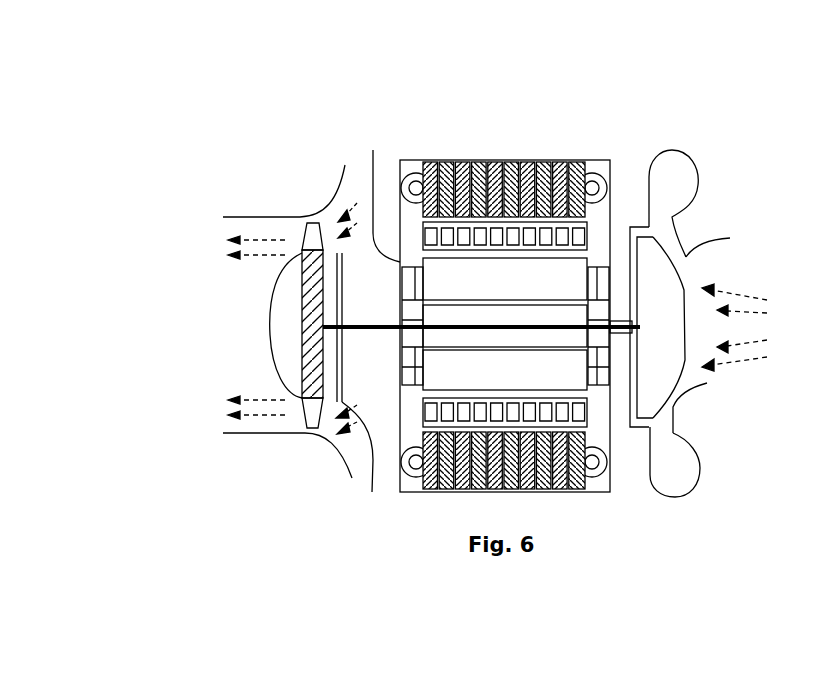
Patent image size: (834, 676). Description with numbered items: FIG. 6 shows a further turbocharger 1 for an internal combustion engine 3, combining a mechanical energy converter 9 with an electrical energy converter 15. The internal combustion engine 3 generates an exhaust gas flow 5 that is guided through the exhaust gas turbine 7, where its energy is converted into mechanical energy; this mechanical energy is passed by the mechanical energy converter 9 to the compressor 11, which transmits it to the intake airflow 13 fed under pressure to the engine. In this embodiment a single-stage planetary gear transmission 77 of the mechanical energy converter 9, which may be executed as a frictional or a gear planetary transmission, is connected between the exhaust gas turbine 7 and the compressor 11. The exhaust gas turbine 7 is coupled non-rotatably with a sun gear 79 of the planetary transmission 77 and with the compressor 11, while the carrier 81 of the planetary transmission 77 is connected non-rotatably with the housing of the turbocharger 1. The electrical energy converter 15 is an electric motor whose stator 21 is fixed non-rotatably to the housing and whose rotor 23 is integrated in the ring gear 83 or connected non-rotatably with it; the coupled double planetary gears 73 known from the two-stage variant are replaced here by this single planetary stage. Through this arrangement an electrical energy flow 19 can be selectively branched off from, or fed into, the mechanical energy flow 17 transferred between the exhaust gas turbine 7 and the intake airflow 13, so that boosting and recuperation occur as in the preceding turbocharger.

The turbocharger 1 is at (195, 90).
The internal combustion engine 3 is at (733, 211).
The exhaust gas flow 5 is at (245, 383).
The exhaust gas turbine 7 is at (287, 337).
The mechanical energy converter 9 is at (510, 336).
The compressor 11 is at (665, 307).
The intake airflow 13 is at (810, 336).
The electrical energy converter 15 is at (450, 493).
The mechanical energy flow 17 is at (384, 360).
The electrical energy flow 19 is at (533, 151).
The stator 21 is at (436, 180).
The rotor 23 is at (465, 232).
The double planetary gears 73 is at (433, 283).
The planetary gear transmission 77 is at (408, 462).
The sun gear 79 is at (568, 330).
The carrier 81 is at (605, 283).
The ring gear 83 is at (547, 250).